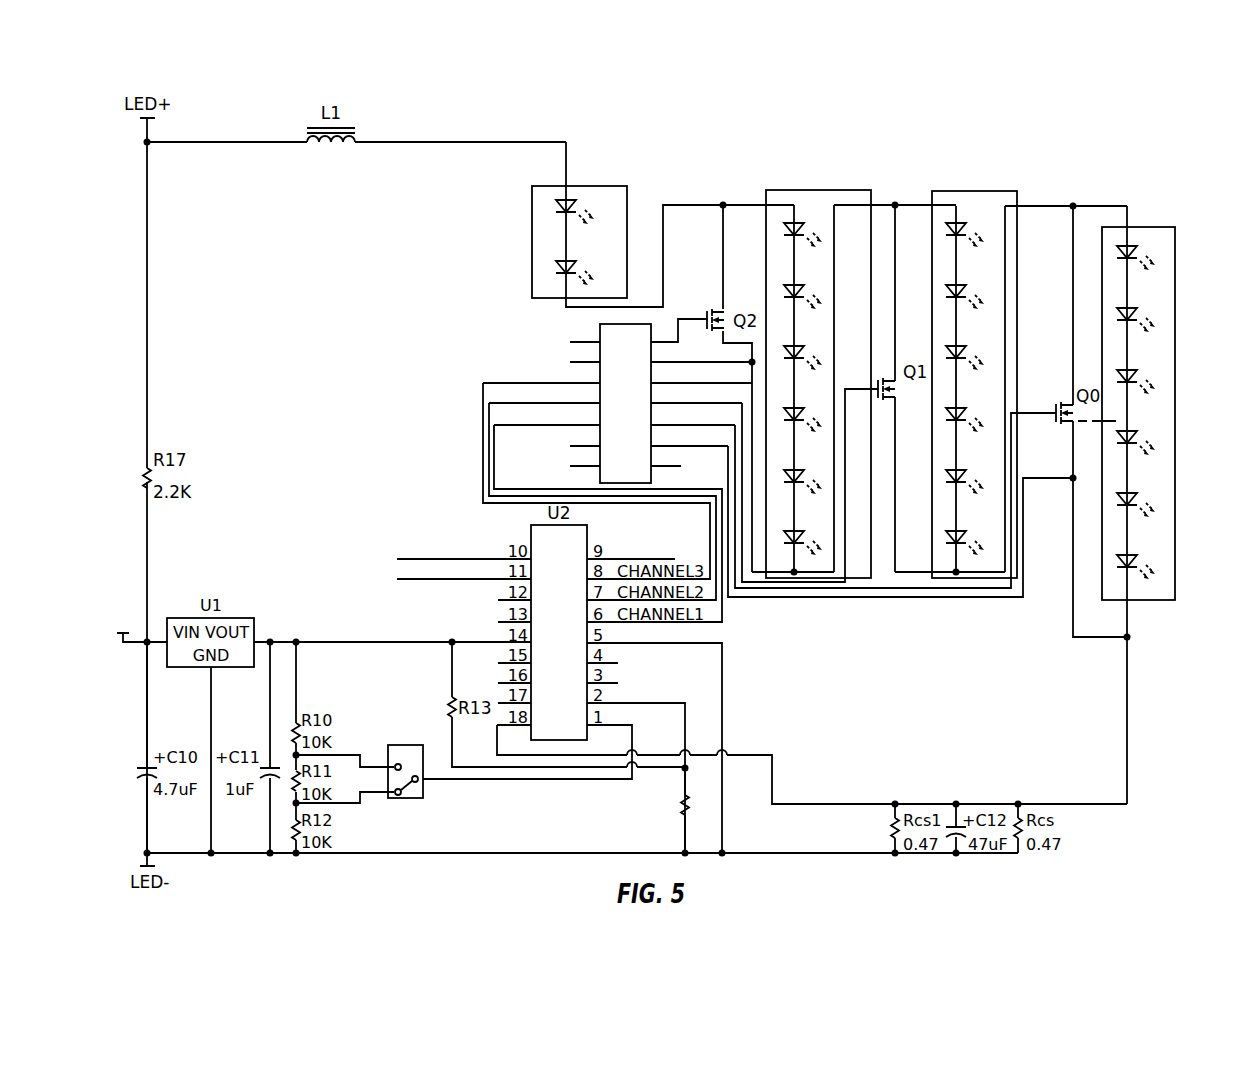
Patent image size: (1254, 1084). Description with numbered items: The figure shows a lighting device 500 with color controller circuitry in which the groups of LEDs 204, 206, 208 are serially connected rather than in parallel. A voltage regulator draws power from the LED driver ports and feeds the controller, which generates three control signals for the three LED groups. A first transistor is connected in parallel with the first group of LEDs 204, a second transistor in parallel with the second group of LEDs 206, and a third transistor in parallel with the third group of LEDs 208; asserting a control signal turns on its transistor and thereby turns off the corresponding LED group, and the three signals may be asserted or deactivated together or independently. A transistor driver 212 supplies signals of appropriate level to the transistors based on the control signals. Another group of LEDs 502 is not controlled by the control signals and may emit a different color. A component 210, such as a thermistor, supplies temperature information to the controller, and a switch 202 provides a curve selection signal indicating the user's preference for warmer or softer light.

The lighting device 500 is at (1120, 128).
The group of LEDs 502 is at (531, 243).
The gate driver / control IC 212 is at (600, 335).
The third group of LEDs 208 is at (817, 190).
The second group of LEDs 206 is at (956, 190).
The first group of LEDs 204 is at (1103, 203).
The switch 202 is at (405, 745).
The component 210 is at (681, 810).